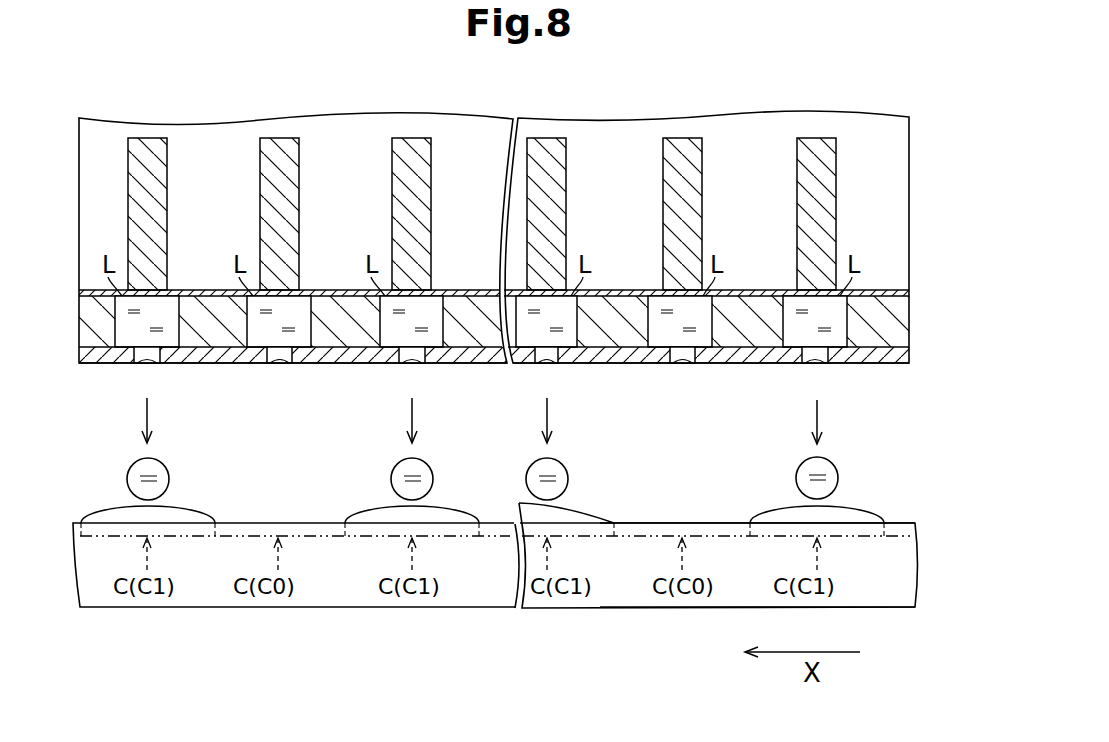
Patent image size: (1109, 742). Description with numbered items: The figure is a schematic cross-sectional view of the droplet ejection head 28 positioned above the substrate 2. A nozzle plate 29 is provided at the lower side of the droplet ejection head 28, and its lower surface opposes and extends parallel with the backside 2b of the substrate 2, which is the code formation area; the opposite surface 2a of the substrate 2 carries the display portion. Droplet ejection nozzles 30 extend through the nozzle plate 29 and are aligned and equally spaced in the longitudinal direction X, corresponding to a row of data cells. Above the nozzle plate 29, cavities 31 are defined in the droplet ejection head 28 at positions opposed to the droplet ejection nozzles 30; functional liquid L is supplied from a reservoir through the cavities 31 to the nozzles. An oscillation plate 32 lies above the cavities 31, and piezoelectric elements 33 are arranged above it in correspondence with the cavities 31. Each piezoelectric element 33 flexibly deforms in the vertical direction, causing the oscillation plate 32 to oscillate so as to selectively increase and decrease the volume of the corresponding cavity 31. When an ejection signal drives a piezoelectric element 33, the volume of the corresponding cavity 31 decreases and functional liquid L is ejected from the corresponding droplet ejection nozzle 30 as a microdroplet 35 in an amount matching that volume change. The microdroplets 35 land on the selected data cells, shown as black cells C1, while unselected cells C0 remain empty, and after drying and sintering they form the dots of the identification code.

The droplet ejection head 28 is at (910, 75).
The piezoelectric element 33 is at (128, 187).
The oscillation plate 32 is at (909, 289).
The cavity 31 is at (178, 313).
The nozzle plate 29 is at (909, 355).
The droplet ejection nozzle 30 is at (138, 365).
The microdroplet 35 is at (187, 506).
The substrate 2 is at (917, 559).
The backside 2b is at (904, 523).
The surface 2a is at (912, 609).